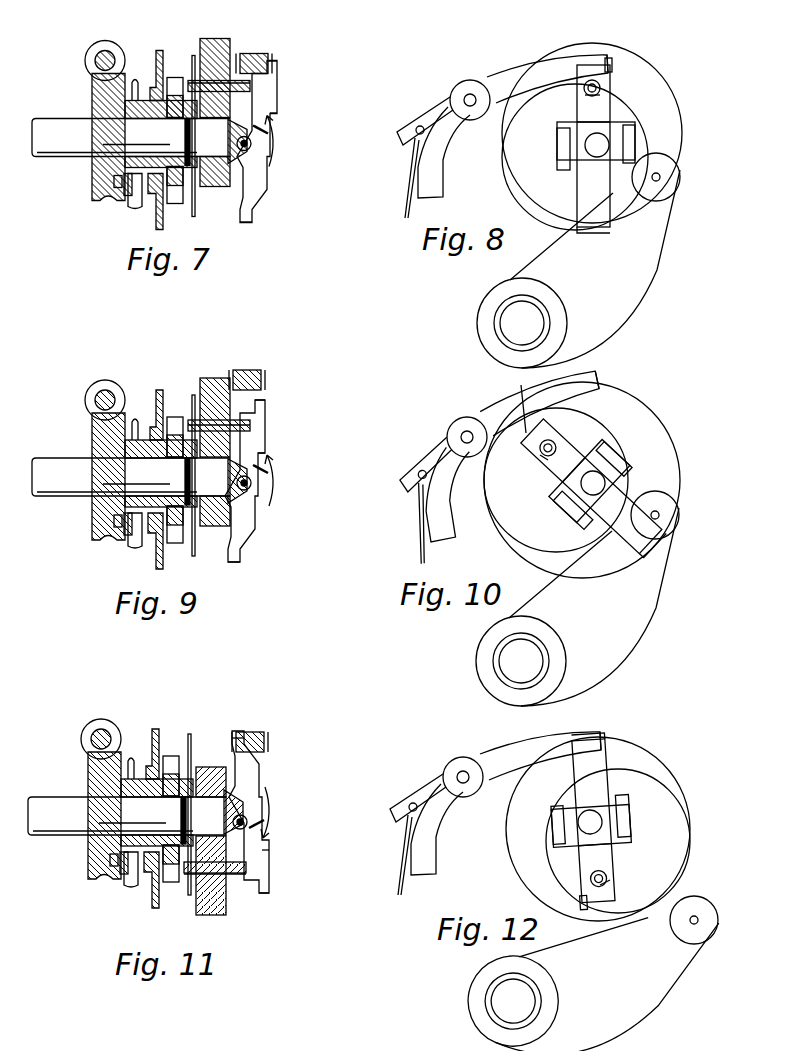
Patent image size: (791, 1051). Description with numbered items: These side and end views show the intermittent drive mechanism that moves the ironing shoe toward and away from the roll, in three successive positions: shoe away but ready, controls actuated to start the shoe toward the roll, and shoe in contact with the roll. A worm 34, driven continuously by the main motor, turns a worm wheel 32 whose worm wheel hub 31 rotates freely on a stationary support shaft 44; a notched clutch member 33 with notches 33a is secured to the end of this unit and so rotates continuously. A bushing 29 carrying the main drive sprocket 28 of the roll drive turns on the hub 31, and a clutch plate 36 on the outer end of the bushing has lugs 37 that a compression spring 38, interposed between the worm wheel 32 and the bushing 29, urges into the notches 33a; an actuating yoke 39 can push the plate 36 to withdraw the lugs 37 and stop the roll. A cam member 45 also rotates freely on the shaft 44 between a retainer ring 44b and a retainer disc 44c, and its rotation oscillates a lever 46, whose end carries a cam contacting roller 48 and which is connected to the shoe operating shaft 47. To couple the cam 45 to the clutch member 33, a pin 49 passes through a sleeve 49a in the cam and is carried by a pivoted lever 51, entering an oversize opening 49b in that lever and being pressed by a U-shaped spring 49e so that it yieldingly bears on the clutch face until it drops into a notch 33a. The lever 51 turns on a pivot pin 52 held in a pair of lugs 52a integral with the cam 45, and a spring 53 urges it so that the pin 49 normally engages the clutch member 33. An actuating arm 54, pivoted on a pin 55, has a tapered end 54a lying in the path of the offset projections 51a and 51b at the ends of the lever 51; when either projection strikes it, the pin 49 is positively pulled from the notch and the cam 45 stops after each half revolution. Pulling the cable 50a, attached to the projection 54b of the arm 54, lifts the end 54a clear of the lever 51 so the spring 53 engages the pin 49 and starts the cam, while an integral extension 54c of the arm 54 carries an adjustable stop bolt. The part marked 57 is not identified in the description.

In FIG. 7, the main drive sprocket 28 is at (135, 78).
In FIG. 9, the main drive sprocket 28 is at (133, 413).
In FIG. 11, the main drive sprocket 28 is at (135, 755).
In FIG. 7, the bushing 29 is at (133, 187).
In FIG. 9, the bushing 29 is at (133, 530).
In FIG. 11, the bushing 29 is at (137, 867).
In FIG. 7, the worm wheel hub 31 is at (130, 113).
In FIG. 9, the worm wheel hub 31 is at (127, 450).
In FIG. 11, the worm wheel hub 31 is at (123, 790).
In FIG. 7, the worm wheel 32 is at (92, 85).
In FIG. 9, the worm wheel 32 is at (92, 420).
In FIG. 11, the worm wheel 32 is at (87, 762).
In FIG. 7, the notched clutch member 33 is at (187, 185).
In FIG. 9, the notched clutch member 33 is at (178, 522).
In FIG. 11, the notched clutch member 33 is at (183, 893).
In FIG. 7, the notches 33a is at (175, 80).
In FIG. 9, the notches 33a is at (170, 418).
In FIG. 11, the notches 33a is at (170, 757).
In FIG. 7, the worm 34 is at (100, 42).
In FIG. 9, the worm 34 is at (98, 387).
In FIG. 11, the worm 34 is at (93, 725).
In FIG. 7, the clutch plate 36 is at (153, 193).
In FIG. 9, the clutch plate 36 is at (148, 537).
In FIG. 11, the clutch plate 36 is at (153, 873).
In FIG. 7, the lugs 37 is at (172, 197).
In FIG. 9, the lugs 37 is at (172, 540).
In FIG. 11, the lugs 37 is at (170, 887).
In FIG. 7, the compression spring 38 is at (122, 187).
In FIG. 9, the compression spring 38 is at (118, 532).
In FIG. 11, the compression spring 38 is at (118, 867).
In FIG. 7, the actuating yoke 39 is at (168, 45).
In FIG. 9, the actuating yoke 39 is at (167, 375).
In FIG. 11, the actuating yoke 39 is at (170, 710).
In FIG. 7, the support shaft 44 is at (58, 143).
In FIG. 9, the support shaft 44 is at (52, 485).
In FIG. 11, the support shaft 44 is at (45, 823).
In FIG. 7, the retainer ring 44b is at (185, 128).
In FIG. 9, the retainer ring 44b is at (183, 463).
In FIG. 11, the retainer ring 44b is at (177, 805).
In FIG. 7, the retainer disc 44c is at (237, 163).
In FIG. 9, the retainer disc 44c is at (237, 493).
In FIG. 11, the retainer disc 44c is at (233, 810).
In FIG. 7, the cam member 45 is at (220, 45).
In FIG. 9, the cam member 45 is at (213, 390).
In FIG. 11, the cam member 45 is at (202, 768).
In FIG. 8, the cam member 45 is at (623, 80).
In FIG. 10, the cam member 45 is at (583, 432).
In FIG. 12, the cam member 45 is at (667, 815).
In FIG. 8, the lever 46 is at (650, 255).
In FIG. 10, the lever 46 is at (637, 617).
In FIG. 12, the lever 46 is at (675, 975).
In FIG. 8, the shoe operating shaft 47 is at (513, 320).
In FIG. 10, the shoe operating shaft 47 is at (507, 662).
In FIG. 12, the shoe operating shaft 47 is at (503, 1000).
In FIG. 8, the cam contacting roller 48 is at (683, 178).
In FIG. 10, the cam contacting roller 48 is at (677, 518).
In FIG. 12, the cam contacting roller 48 is at (718, 918).
In FIG. 7, the pin 49 is at (233, 90).
In FIG. 9, the pin 49 is at (233, 418).
In FIG. 11, the pin 49 is at (223, 877).
In FIG. 8, the pin 49 is at (595, 85).
In FIG. 10, the pin 49 is at (550, 443).
In FIG. 12, the pin 49 is at (592, 873).
In FIG. 7, the sleeve 49a is at (207, 85).
In FIG. 9, the sleeve 49a is at (237, 427).
In FIG. 11, the sleeve 49a is at (233, 897).
In FIG. 8, the oversize opening 49b is at (600, 90).
In FIG. 10, the oversize opening 49b is at (542, 448).
In FIG. 12, the oversize opening 49b is at (607, 880).
In FIG. 7, the U-shaped spring 49e is at (275, 108).
In FIG. 9, the U-shaped spring 49e is at (268, 448).
In FIG. 11, the U-shaped spring 49e is at (267, 850).
In FIG. 8, the cable 50a is at (415, 185).
In FIG. 10, the cable 50a is at (415, 522).
In FIG. 12, the cable 50a is at (402, 857).
In FIG. 7, the pivoted lever member 51 is at (265, 98).
In FIG. 9, the pivoted lever member 51 is at (253, 437).
In FIG. 11, the pivoted lever member 51 is at (253, 780).
In FIG. 8, the pivoted lever member 51 is at (580, 105).
In FIG. 10, the pivoted lever member 51 is at (555, 467).
In FIG. 12, the pivoted lever member 51 is at (607, 867).
In FIG. 7, the offset projection 51a is at (278, 68).
In FIG. 9, the offset projection 51a is at (267, 400).
In FIG. 11, the offset projection 51a is at (268, 892).
In FIG. 8, the offset projection 51a is at (577, 62).
In FIG. 10, the offset projection 51a is at (523, 390).
In FIG. 12, the offset projection 51a is at (600, 903).
In FIG. 7, the offset projection 51b is at (250, 213).
In FIG. 9, the offset projection 51b is at (252, 553).
In FIG. 11, the offset projection 51b is at (230, 738).
In FIG. 8, the offset projection 51b is at (593, 227).
In FIG. 10, the offset projection 51b is at (667, 538).
In FIG. 12, the offset projection 51b is at (577, 768).
In FIG. 7, the pivot pin 52 is at (248, 150).
In FIG. 9, the pivot pin 52 is at (243, 482).
In FIG. 11, the pivot pin 52 is at (237, 813).
In FIG. 8, the lugs 52a is at (555, 143).
In FIG. 10, the lugs 52a is at (607, 450).
In FIG. 12, the lugs 52a is at (627, 797).
In FIG. 7, the spring 53 is at (283, 133).
In FIG. 9, the spring 53 is at (287, 467).
In FIG. 11, the spring 53 is at (283, 827).
In FIG. 8, the spring 53 is at (573, 117).
In FIG. 10, the spring 53 is at (573, 467).
In FIG. 12, the spring 53 is at (608, 847).
In FIG. 7, the actuating arm 54 is at (267, 57).
In FIG. 9, the actuating arm 54 is at (257, 373).
In FIG. 11, the actuating arm 54 is at (260, 725).
In FIG. 8, the actuating arm 54 is at (500, 83).
In FIG. 10, the actuating arm 54 is at (490, 415).
In FIG. 12, the actuating arm 54 is at (507, 752).
In FIG. 8, the tapered end 54a is at (608, 58).
In FIG. 10, the tapered end 54a is at (593, 380).
In FIG. 12, the tapered end 54a is at (593, 735).
In FIG. 8, the projection 54b is at (405, 130).
In FIG. 10, the projection 54b is at (397, 477).
In FIG. 12, the projection 54b is at (398, 800).
In FIG. 8, the integral extension 54c is at (430, 182).
In FIG. 10, the integral extension 54c is at (433, 525).
In FIG. 12, the integral extension 54c is at (425, 857).
In FIG. 8, the pin 55 is at (463, 97).
In FIG. 10, the pin 55 is at (463, 437).
In FIG. 12, the pin 55 is at (460, 775).
In FIG. 7, the plate disc 57 is at (193, 215).
In FIG. 9, the plate disc 57 is at (195, 553).
In FIG. 11, the plate disc 57 is at (193, 730).
In FIG. 8, the plate disc 57 is at (550, 203).
In FIG. 10, the plate disc 57 is at (670, 465).
In FIG. 12, the plate disc 57 is at (627, 748).